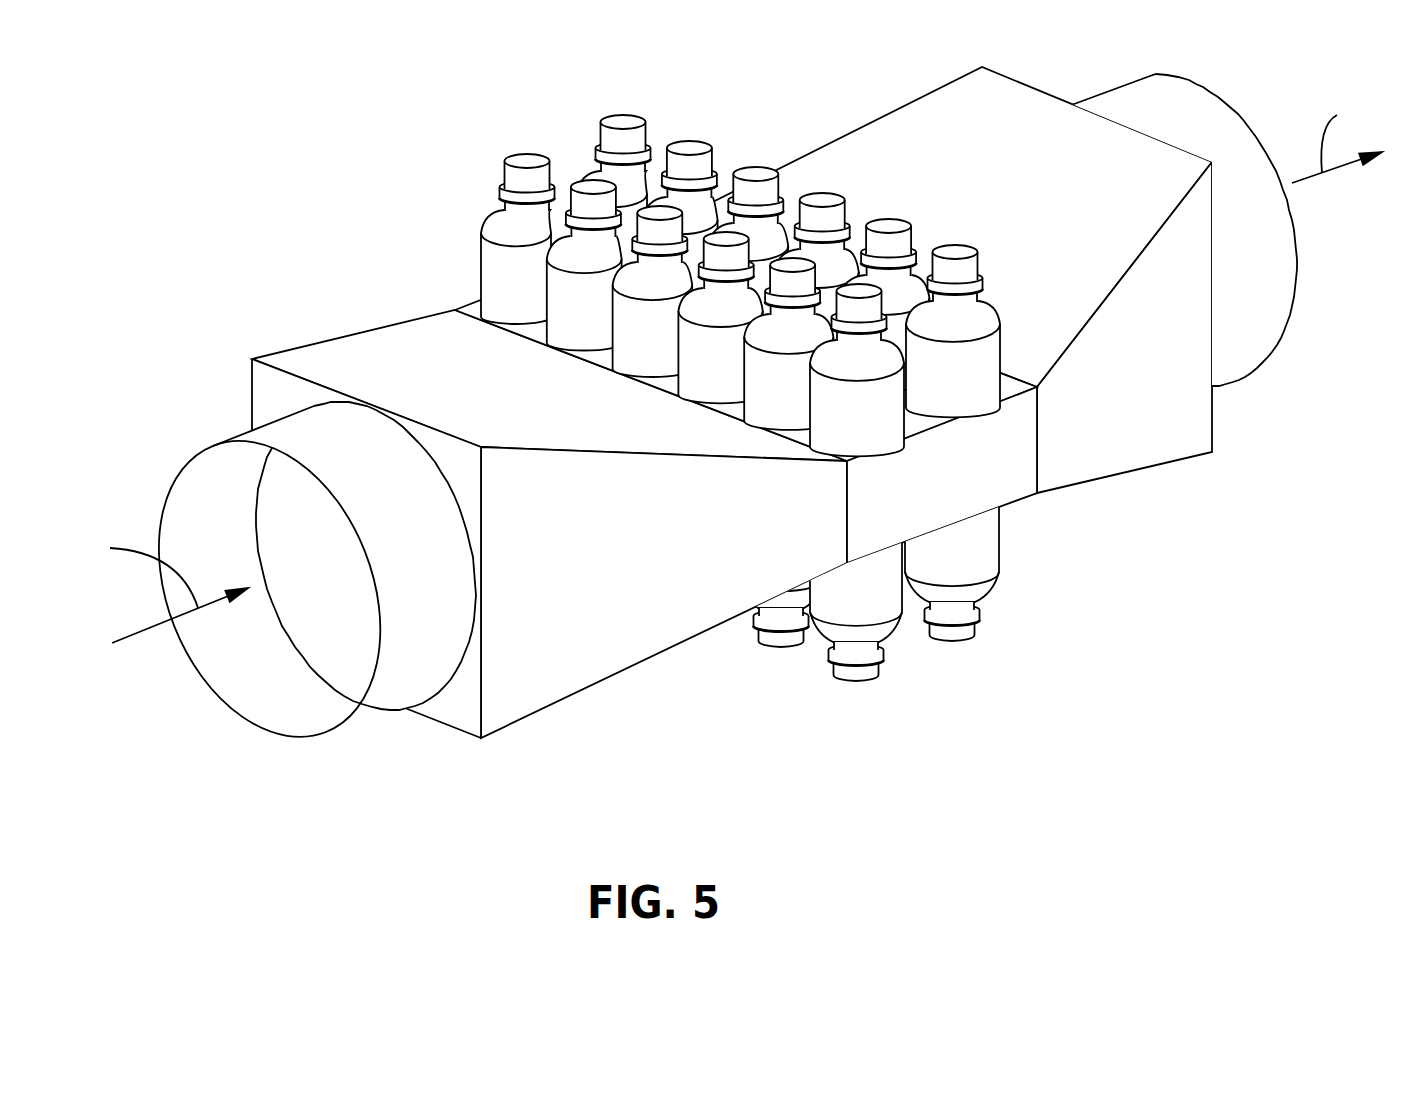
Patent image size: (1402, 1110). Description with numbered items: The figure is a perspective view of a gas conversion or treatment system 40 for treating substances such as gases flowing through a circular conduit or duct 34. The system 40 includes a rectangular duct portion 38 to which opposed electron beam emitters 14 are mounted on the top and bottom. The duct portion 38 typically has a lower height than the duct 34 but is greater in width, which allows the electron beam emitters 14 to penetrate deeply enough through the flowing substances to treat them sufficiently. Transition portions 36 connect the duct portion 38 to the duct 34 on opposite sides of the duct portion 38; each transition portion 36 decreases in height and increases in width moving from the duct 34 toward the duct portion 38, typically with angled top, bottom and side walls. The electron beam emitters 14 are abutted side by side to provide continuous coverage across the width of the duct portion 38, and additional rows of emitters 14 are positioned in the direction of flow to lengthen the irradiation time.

The electron beam emitter 14 is at (506, 157).
The circular duct 34 is at (378, 722).
The transition portion 36 is at (628, 648).
The rectangular duct portion 38 is at (978, 470).
The gas conversion or treatment system 40 is at (734, 441).